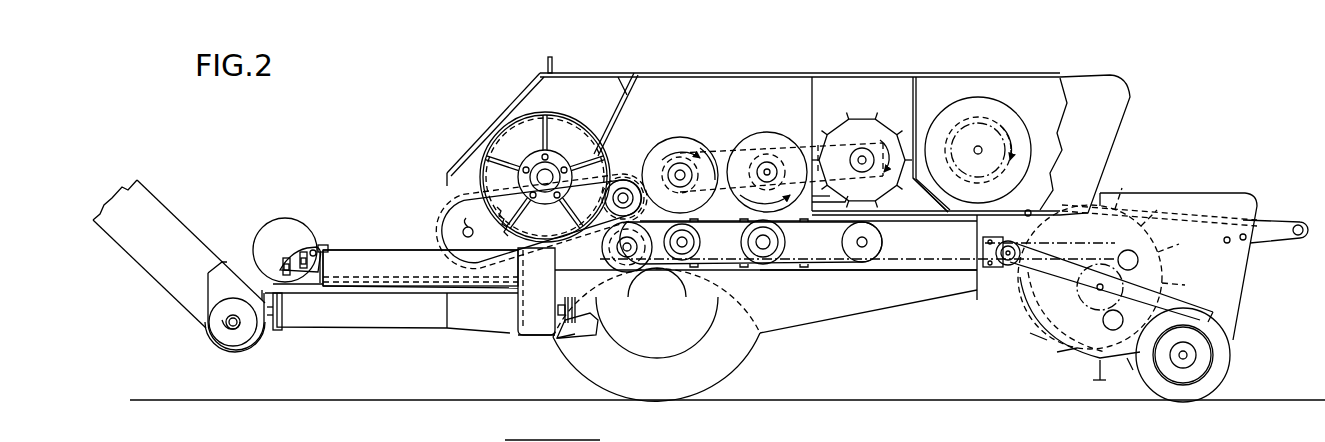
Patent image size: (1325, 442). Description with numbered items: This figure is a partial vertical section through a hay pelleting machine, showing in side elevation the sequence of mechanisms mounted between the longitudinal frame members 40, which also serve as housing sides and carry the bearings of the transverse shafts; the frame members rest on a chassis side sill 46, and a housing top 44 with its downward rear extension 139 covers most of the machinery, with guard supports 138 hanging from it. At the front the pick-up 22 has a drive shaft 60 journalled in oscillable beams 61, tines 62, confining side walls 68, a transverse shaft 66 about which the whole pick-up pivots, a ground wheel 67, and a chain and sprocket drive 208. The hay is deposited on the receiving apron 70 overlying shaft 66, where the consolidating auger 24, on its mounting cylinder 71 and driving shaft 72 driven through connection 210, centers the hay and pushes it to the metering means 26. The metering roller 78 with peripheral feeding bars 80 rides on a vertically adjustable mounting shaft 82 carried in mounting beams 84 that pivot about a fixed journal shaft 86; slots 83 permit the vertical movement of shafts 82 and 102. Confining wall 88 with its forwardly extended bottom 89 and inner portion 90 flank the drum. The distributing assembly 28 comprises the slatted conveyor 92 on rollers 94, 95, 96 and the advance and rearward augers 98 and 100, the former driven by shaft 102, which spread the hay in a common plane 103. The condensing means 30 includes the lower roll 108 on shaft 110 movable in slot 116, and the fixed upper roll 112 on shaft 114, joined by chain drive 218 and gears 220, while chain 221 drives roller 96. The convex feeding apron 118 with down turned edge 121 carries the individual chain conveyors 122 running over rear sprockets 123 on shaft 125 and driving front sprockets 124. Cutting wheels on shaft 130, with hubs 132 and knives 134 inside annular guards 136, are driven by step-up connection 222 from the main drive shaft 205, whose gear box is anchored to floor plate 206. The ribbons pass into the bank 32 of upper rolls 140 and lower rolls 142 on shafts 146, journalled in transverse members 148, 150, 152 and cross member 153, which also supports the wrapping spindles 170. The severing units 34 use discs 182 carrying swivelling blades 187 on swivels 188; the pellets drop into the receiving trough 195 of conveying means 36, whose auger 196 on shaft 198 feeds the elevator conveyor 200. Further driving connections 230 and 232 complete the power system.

The pick-up 22 is at (1090, 393).
The consolidating auger 24 is at (980, 67).
The metering means 26 is at (860, 74).
The metering roll, feed distributing augers and underlying conveyor 28 is at (905, 47).
The density increasing and cutting means 30 is at (545, 51).
The bank of hay roll forming units 32 is at (374, 211).
The pellet severing units 34 is at (282, 193).
The conveying means for severed pellets 36 is at (160, 193).
The longitudinally extending frame members 40 is at (322, 289).
The housing top 44 is at (637, 72).
The chassis frame side sill 46 is at (866, 305).
The pick-up drive shaft 60 is at (1063, 348).
The oscillable beams 61 is at (1066, 279).
The tines 62 is at (1093, 378).
The transverse drive shaft 66 is at (1030, 287).
The ground running wheel 67 is at (1232, 360).
The confining side walls 68 is at (1185, 266).
The hay receiving apron 70 is at (1011, 211).
The mounting cylinder 71 is at (977, 147).
The auger driving shaft 72 is at (986, 142).
The drum type metering roller 78 is at (886, 125).
The peripheral feeding bars 80 is at (833, 133).
The mounting shaft 82 is at (865, 171).
The slots 83 is at (812, 149).
The mounting beams 84 is at (718, 156).
The fixed journal shaft 86 is at (672, 146).
The hay confining wall 88 is at (917, 100).
The forwardly extended bottom 89 is at (931, 199).
The inner wall portion 90 is at (832, 144).
The slatted feed conveyor 92 is at (796, 270).
The conveyor roller 94 is at (883, 242).
The conveyor roller 95 is at (786, 243).
The conveyor roller 96 is at (701, 243).
The advance redistributing auger 98 is at (775, 143).
The rearward redistributing auger 100 is at (690, 129).
The auger drive shaft 102 is at (757, 150).
The common horizontal plane 103 is at (830, 198).
The lower feed and condensing roll 108 is at (602, 266).
The lower roll drive shaft 110 is at (617, 262).
The upper feed and condensing roll 112 is at (606, 178).
The upper roll driving shaft 114 is at (634, 180).
The slot 116 is at (620, 270).
The feeding apron 118 is at (600, 240).
The down turned edge 121 is at (519, 256).
The individual chain conveyors 122 is at (420, 307).
The rear sprockets 123 is at (452, 200).
The front sprockets 124 is at (618, 186).
The sprocket shaft 125 is at (477, 223).
The cutting wheel shaft 130 is at (600, 140).
The hubs 132 is at (539, 165).
The cutting knives 134 is at (521, 172).
The annular guards 136 is at (552, 114).
The guard supports 138 is at (628, 92).
The downward rear extension 139 is at (490, 126).
The upper rolls 140 is at (410, 261).
The lower rolls 142 is at (395, 319).
The lower roll shafts 146 is at (268, 275).
The front transverse frame member 148 is at (541, 344).
The rear transverse frame member 150 is at (323, 245).
The rear transverse member 152 is at (279, 333).
The fourth cross member 153 is at (548, 338).
The wrapping spindles 170 is at (373, 275).
The cutting blade carrying discs 182 is at (262, 232).
The cutting blades 187 is at (288, 272).
The swivels 188 is at (297, 275).
The receiving trough 195 is at (240, 351).
The conveying auger 196 is at (225, 340).
The transverse shaft 198 is at (225, 323).
The pellet receiving elevator conveyor 200 is at (148, 272).
The main drive shaft 205 is at (731, 306).
The floor plate 206 is at (946, 271).
The chain and sprocket drive for pick-up 208 is at (1071, 244).
The chain and sprocket connection 210 is at (1028, 150).
The chain drive 218 is at (641, 135).
The set of gears 220 is at (542, 221).
The chain 221 is at (660, 288).
The step-up chain and sprocket connection 222 is at (710, 287).
The driving connection 230 is at (568, 339).
The driving connection 232 is at (601, 327).